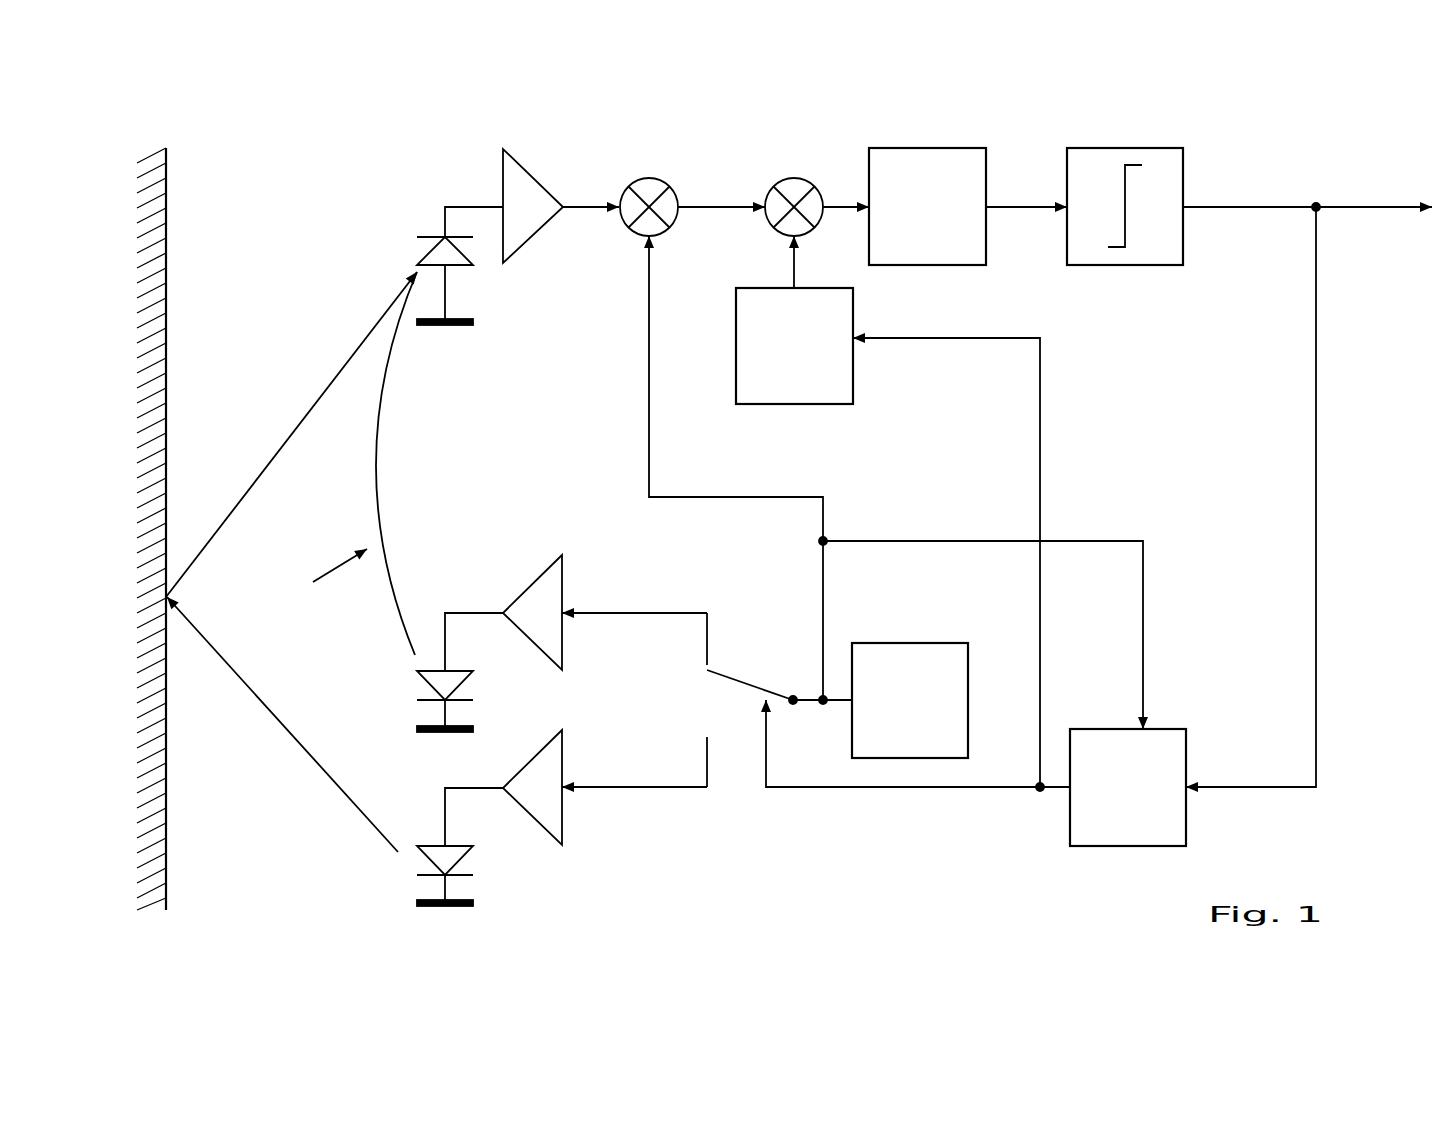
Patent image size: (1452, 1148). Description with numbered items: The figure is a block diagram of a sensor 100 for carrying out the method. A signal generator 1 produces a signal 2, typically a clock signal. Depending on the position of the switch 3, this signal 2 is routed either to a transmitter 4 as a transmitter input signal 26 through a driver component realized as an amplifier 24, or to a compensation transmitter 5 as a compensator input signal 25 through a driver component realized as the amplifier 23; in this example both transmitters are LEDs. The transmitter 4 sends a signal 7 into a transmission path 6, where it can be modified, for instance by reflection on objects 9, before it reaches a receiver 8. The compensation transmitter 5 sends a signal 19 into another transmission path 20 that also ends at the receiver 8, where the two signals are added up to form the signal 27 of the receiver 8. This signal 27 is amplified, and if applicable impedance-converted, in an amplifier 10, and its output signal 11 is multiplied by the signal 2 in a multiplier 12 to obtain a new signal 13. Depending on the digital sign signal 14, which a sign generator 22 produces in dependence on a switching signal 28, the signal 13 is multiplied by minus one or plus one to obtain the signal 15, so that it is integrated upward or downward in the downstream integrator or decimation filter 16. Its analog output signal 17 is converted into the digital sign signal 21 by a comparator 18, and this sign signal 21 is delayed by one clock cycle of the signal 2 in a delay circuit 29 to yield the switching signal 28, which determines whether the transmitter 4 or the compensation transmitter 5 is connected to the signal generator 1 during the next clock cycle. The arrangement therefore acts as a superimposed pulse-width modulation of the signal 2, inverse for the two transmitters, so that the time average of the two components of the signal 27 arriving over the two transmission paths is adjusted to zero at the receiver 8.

The sensor 100 is at (778, 93).
The signal generator 1 is at (910, 700).
The signal 2 is at (895, 482).
The switch 3 is at (679, 700).
The transmitter 4 is at (456, 870).
The compensation transmitter 5 is at (456, 697).
The transmission path 6 is at (277, 432).
The signal 7 is at (280, 723).
The receiver 8 is at (450, 295).
The objects 9 is at (161, 529).
The amplifier 10 is at (531, 192).
The output signal 11 is at (591, 195).
The multiplier 12 is at (649, 190).
The signal 13 is at (721, 194).
The digital sign signal 14 is at (794, 233).
The signal 15 is at (846, 198).
The integrator or decimation filter 16 is at (927, 190).
The analog output signal 17 is at (1026, 193).
The comparator 18 is at (1125, 190).
The signal 19 is at (326, 573).
The transmission path 20 is at (396, 463).
The digital sign signal 21 is at (1307, 483).
The sign generator 22 is at (794, 360).
The amplifier 23 is at (532, 612).
The amplifier 24 is at (532, 787).
The compensator input signal 25 is at (474, 628).
The transmitter input signal 26 is at (474, 801).
The signal of the receiver 27 is at (449, 215).
The switching signal 28 is at (915, 565).
The delay circuit 29 is at (1128, 787).